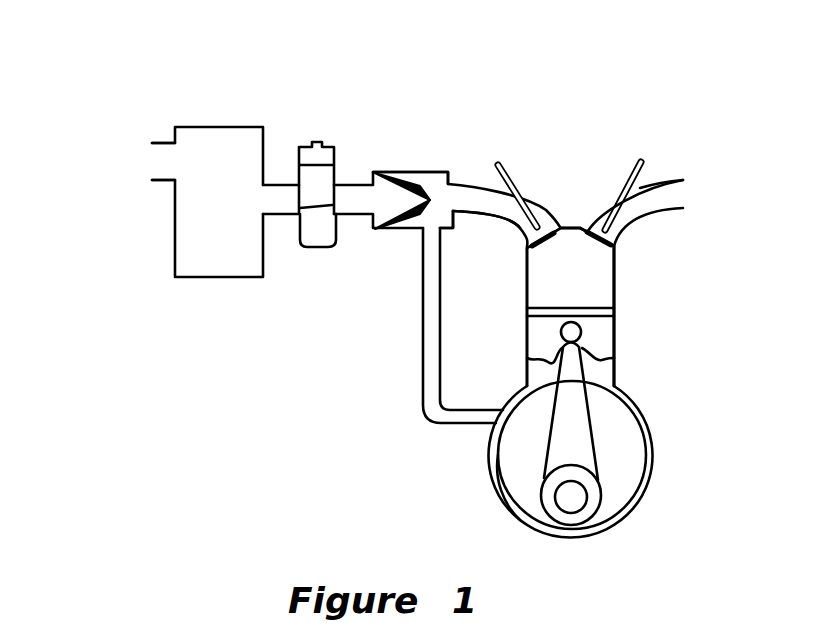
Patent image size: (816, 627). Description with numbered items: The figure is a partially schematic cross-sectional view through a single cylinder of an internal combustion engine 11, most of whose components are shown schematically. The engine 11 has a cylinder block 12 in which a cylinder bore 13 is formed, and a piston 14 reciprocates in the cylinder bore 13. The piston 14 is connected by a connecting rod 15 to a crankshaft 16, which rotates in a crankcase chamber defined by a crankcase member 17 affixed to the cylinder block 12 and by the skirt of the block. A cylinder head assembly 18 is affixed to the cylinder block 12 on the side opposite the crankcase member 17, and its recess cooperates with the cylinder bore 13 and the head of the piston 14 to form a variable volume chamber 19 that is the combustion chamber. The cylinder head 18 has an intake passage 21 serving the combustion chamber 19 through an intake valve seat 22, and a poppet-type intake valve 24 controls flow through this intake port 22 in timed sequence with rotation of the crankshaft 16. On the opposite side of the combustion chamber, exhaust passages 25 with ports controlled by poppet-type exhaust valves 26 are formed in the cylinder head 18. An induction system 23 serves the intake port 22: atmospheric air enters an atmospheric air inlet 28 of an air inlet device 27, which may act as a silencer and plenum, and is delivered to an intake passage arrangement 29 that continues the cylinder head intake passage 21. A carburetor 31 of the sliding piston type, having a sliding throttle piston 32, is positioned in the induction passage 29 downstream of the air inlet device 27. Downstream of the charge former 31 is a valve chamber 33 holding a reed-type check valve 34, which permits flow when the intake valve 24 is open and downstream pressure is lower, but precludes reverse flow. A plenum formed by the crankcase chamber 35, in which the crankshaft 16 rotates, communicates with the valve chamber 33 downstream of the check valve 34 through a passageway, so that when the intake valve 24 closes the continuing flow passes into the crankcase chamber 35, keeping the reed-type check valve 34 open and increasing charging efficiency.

The internal combustion engine 11 is at (670, 319).
The cylinder block 12 is at (624, 346).
The cylinder bore 13 is at (610, 276).
The piston 14 is at (542, 340).
The connecting rod 15 is at (590, 424).
The crankshaft 16 is at (590, 498).
The crankcase member 17 is at (650, 457).
The cylinder head assembly 18 is at (569, 220).
The variable volume chamber 19 is at (615, 255).
The intake passage 21 is at (512, 218).
The intake valve seat 22 is at (535, 250).
The induction system 23 is at (262, 317).
The intake valve 24 is at (545, 208).
The exhaust passage 25 is at (665, 198).
The exhaust valve 26 is at (424, 334).
The air inlet device 27 is at (213, 142).
The atmospheric air inlet 28 is at (165, 157).
The intake passage arrangement 29 is at (350, 176).
The carburetor 31 is at (292, 180).
The sliding throttle piston 32 is at (315, 192).
The valve chamber 33 is at (440, 180).
The reed-type check valve 34 is at (410, 180).
The crankcase chamber 35 is at (500, 458).